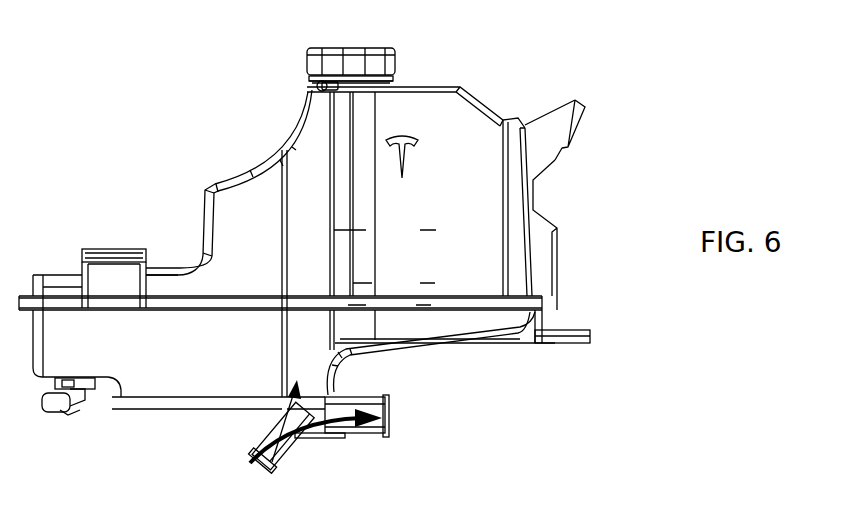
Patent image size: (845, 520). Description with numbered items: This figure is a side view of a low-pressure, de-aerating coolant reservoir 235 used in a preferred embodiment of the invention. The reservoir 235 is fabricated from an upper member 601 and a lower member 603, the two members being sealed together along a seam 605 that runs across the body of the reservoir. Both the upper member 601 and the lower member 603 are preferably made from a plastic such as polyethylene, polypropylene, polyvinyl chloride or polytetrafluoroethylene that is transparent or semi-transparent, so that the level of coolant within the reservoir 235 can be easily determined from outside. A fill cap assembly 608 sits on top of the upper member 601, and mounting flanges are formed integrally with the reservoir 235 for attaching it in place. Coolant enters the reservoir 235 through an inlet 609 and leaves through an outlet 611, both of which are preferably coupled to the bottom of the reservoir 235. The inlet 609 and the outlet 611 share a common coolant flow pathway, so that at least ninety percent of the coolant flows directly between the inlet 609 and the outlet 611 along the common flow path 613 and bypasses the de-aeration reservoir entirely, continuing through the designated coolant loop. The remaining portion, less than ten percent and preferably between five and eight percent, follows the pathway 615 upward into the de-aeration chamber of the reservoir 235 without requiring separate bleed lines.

The coolant reservoir 235 is at (108, 98).
The upper member 601 is at (465, 146).
The lower member 603 is at (197, 373).
The seam 605 is at (480, 300).
The fill cap assembly 608 is at (343, 62).
The inlet 609 is at (242, 446).
The outlet 611 is at (390, 436).
The common flow path 613 is at (306, 426).
The pathway 615 is at (280, 407).